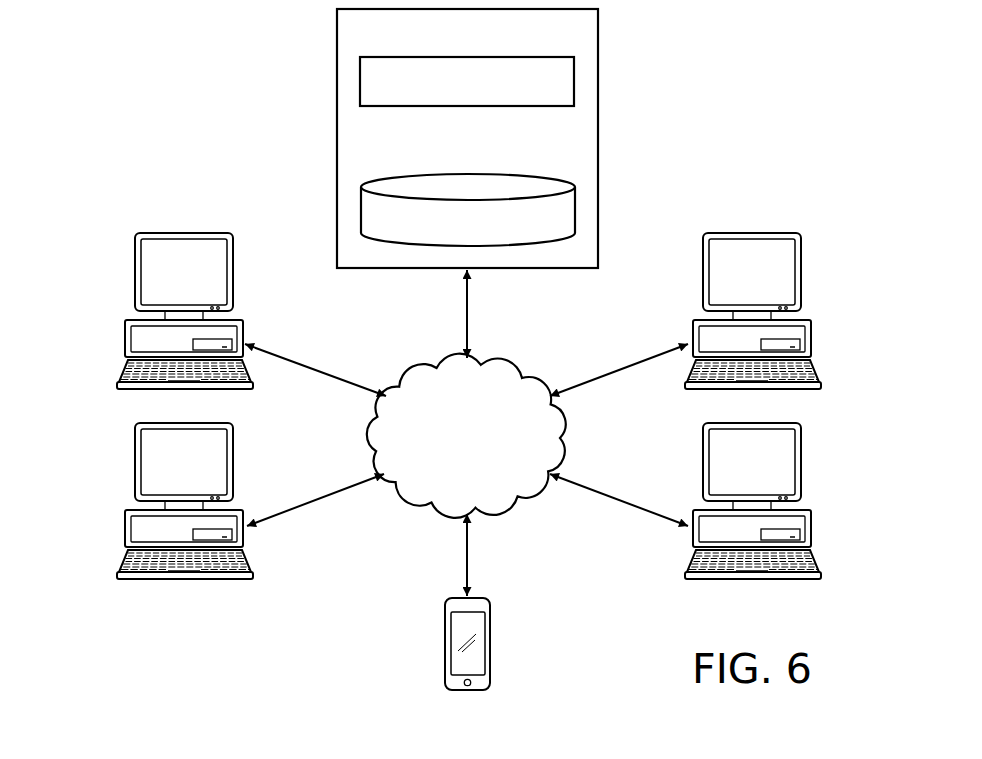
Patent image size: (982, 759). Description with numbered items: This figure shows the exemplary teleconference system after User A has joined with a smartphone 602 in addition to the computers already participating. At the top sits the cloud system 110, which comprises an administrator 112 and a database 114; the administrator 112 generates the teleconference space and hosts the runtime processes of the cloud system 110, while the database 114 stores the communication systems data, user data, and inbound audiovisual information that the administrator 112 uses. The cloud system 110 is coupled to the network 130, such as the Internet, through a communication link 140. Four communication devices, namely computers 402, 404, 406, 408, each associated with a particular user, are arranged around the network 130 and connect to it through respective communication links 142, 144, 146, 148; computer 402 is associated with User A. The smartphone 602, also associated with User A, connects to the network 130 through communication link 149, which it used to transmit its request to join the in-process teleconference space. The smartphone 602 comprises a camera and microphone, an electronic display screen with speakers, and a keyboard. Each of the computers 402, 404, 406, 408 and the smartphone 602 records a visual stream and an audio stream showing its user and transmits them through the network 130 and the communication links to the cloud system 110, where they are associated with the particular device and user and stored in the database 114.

The cloud system 110 is at (337, 145).
The administrator 112 is at (432, 106).
The database 114 is at (502, 175).
The network 130 is at (446, 470).
The communication link 140 is at (465, 318).
The communication link 142 is at (620, 370).
The communication link 144 is at (617, 500).
The communication link 146 is at (318, 500).
The communication link 148 is at (316, 368).
The communication link 149 is at (462, 553).
The computer 402 is at (809, 340).
The computer 404 is at (809, 530).
The computer 406 is at (125, 530).
The computer 408 is at (125, 342).
The smartphone 602 is at (490, 653).